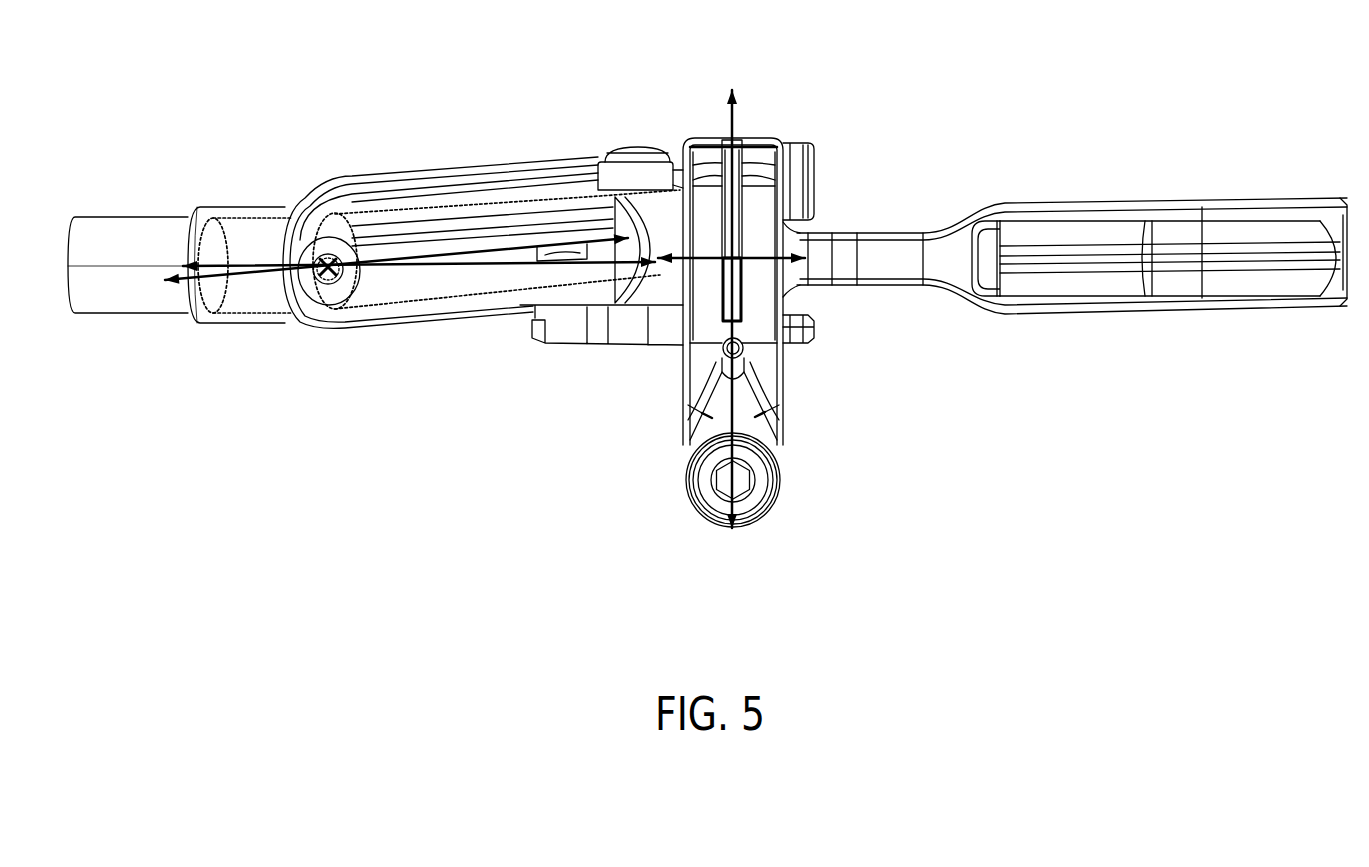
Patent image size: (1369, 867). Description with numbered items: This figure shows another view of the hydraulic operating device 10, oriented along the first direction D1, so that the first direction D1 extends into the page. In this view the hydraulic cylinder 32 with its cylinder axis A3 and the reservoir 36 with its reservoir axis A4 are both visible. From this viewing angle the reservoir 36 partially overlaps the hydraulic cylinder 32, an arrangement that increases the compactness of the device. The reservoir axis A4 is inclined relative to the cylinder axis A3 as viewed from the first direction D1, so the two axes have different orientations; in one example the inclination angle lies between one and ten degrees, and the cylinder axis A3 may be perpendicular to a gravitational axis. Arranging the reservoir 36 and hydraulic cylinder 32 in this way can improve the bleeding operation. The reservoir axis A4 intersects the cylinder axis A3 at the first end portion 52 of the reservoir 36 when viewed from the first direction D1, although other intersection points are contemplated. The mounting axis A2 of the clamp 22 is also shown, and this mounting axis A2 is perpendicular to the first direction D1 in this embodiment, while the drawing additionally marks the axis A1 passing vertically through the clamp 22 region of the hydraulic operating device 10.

The hydraulic operating device 10 is at (707, 280).
The clamp 22 is at (773, 360).
The hydraulic cylinder 32 is at (252, 292).
The reservoir 36 is at (433, 283).
The first end portion of the reservoir 52 is at (323, 232).
The first direction D1 is at (333, 282).
The axis A1 is at (735, 120).
The mounting axis A2 is at (762, 262).
The cylinder axis A3 is at (437, 265).
The reservoir axis A4 is at (480, 247).